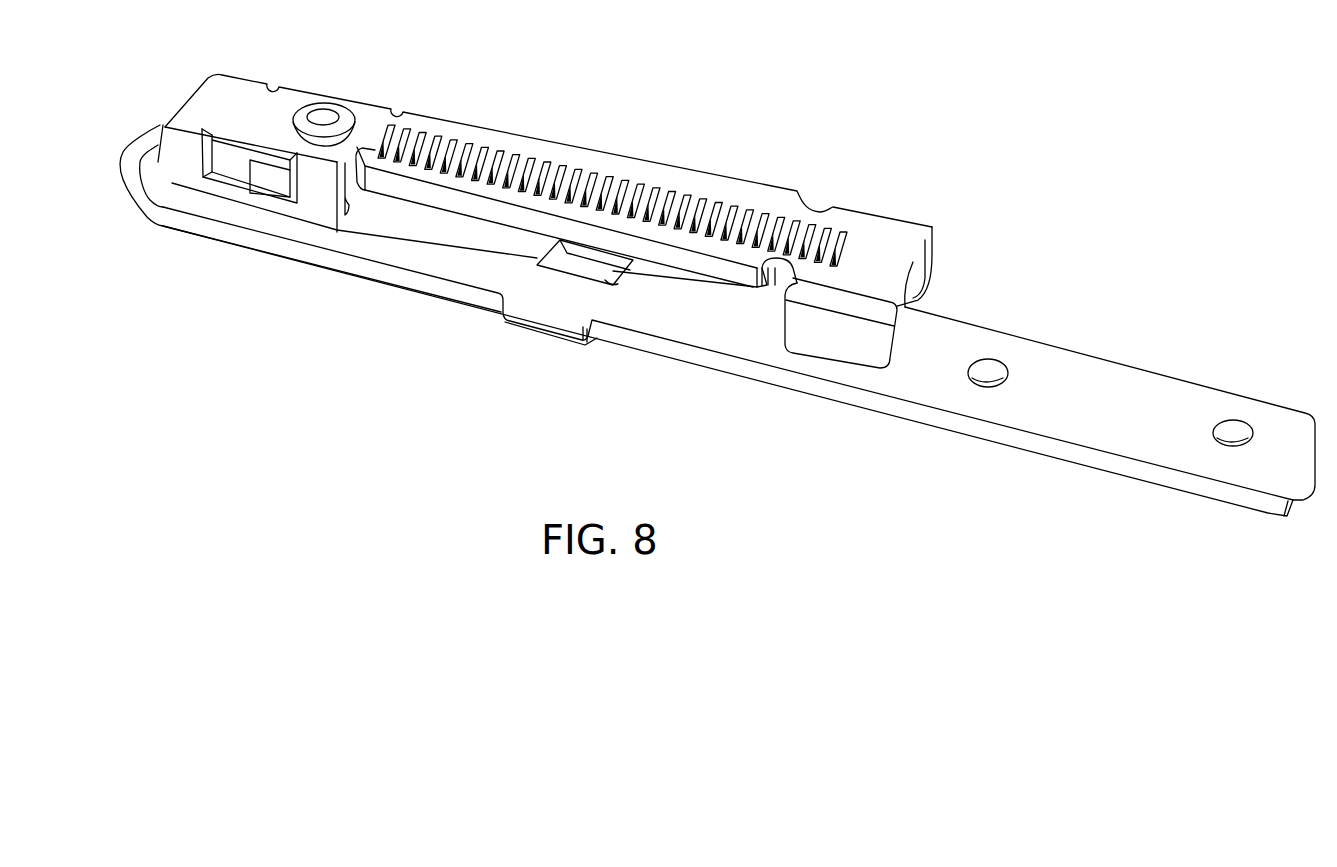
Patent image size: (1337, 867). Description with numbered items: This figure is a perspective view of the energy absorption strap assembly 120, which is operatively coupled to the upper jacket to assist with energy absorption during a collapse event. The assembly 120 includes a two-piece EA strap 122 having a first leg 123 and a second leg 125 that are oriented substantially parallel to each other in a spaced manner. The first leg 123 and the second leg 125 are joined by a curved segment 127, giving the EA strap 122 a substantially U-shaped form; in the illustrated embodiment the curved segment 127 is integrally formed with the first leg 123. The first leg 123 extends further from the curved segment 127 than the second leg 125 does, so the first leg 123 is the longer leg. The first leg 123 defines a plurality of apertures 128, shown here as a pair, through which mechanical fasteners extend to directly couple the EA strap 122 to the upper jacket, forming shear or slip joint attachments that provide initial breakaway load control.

The energy absorption strap assembly 120 is at (350, 368).
The EA strap 122 is at (965, 232).
The first leg 123 is at (681, 323).
The second leg 125 is at (555, 150).
The curved segment 127 is at (152, 137).
The apertures 128 is at (992, 357).